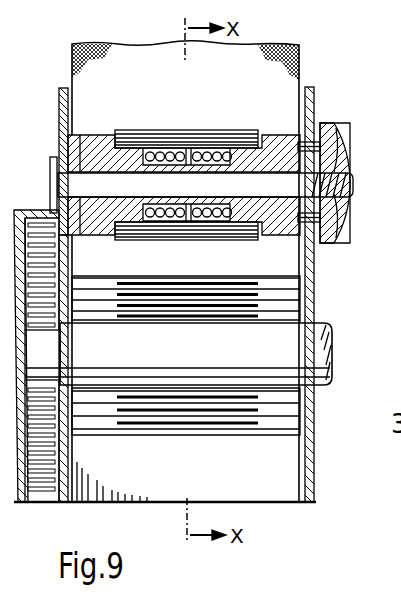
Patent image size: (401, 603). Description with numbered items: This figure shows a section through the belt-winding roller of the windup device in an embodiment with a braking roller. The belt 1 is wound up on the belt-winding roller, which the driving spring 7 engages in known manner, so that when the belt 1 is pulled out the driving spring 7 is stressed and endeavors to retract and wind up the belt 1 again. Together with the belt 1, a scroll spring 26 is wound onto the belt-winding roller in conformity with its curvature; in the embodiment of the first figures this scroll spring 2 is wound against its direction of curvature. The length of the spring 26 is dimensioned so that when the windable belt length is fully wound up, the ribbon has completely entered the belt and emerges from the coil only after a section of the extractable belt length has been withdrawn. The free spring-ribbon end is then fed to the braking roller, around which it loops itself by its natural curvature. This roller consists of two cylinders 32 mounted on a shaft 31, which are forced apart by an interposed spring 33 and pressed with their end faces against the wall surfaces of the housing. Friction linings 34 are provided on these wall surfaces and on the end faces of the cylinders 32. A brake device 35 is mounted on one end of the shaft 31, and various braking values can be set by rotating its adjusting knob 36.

The belt 1 is at (78, 64).
The scroll spring 2 is at (133, 427).
The driving spring 7 is at (46, 482).
The scroll spring 26 is at (243, 133).
The shaft 31 is at (72, 183).
The cylinders 32 is at (92, 138).
The spring 33 is at (152, 156).
The friction linings 34 is at (63, 140).
The brake device 35 is at (330, 234).
The adjusting knob 36 is at (341, 139).